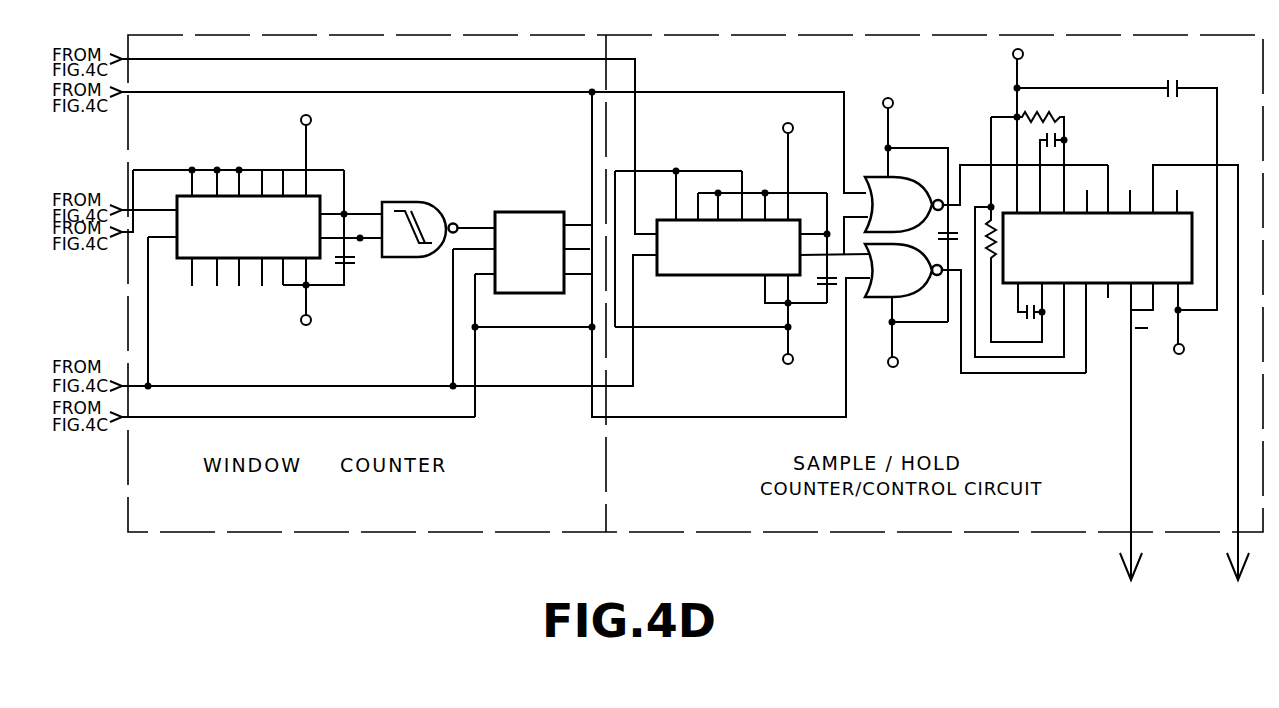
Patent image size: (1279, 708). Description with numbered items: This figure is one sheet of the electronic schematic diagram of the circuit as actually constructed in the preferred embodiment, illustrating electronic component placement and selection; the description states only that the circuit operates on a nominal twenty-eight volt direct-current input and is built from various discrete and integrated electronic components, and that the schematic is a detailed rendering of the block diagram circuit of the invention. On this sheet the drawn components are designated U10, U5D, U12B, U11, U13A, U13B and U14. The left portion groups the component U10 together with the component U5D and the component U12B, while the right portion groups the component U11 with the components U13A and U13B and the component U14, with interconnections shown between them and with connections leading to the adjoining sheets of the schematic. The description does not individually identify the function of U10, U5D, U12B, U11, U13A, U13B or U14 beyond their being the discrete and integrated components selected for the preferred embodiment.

The window counter IC U10 is at (257, 219).
The Schmitt trigger NAND gate U5D is at (429, 216).
The flip-flop U12B is at (522, 247).
The sample/hold counter IC U11 is at (726, 243).
The NOR gate U13A is at (978, 207).
The NOR gate U13B is at (968, 304).
The control counter IC U14 is at (1120, 336).